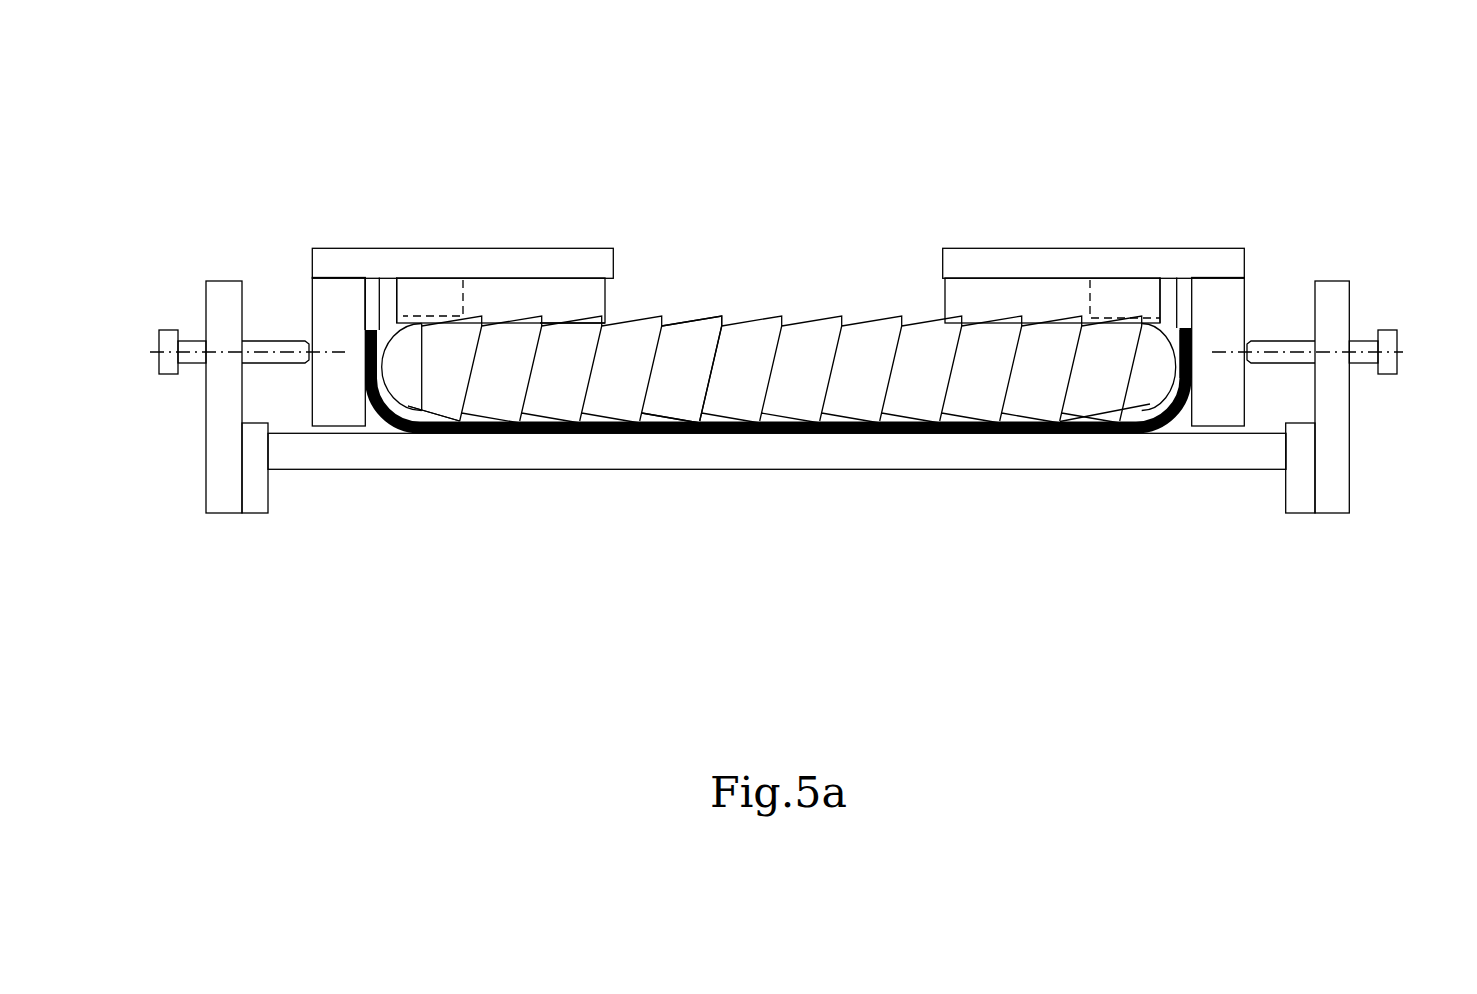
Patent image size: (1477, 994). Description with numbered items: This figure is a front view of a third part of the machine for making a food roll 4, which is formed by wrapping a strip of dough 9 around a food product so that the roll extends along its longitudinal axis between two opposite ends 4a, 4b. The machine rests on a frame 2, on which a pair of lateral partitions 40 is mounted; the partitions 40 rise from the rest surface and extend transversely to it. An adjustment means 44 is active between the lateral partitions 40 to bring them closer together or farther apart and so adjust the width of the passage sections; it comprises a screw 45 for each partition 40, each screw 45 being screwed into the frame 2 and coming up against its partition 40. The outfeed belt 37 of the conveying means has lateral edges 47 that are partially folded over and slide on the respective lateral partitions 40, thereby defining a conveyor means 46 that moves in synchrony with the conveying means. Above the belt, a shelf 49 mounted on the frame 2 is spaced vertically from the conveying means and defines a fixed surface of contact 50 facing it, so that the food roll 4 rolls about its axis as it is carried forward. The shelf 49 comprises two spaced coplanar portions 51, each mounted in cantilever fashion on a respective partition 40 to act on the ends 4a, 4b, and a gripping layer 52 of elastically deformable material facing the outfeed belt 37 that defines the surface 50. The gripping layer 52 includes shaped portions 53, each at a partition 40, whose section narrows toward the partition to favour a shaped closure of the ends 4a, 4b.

The frame 2 is at (797, 453).
The food roll 4 is at (814, 298).
The end of the food roll 4a is at (399, 377).
The end of the food roll 4b is at (1148, 398).
The strip of dough 9 is at (690, 348).
The outfeed belt 37 is at (460, 433).
The lateral partition 40 is at (330, 314).
The adjustment means 44 is at (262, 305).
The screw 45 is at (190, 348).
The conveyor means 46 is at (402, 311).
The lateral edge 47 is at (367, 387).
The shelf 49 is at (560, 238).
The fixed surface of contact 50 is at (577, 299).
The coplanar portion 51 is at (497, 263).
The gripping layer 52 is at (1044, 268).
The shaped portion 53 is at (448, 298).